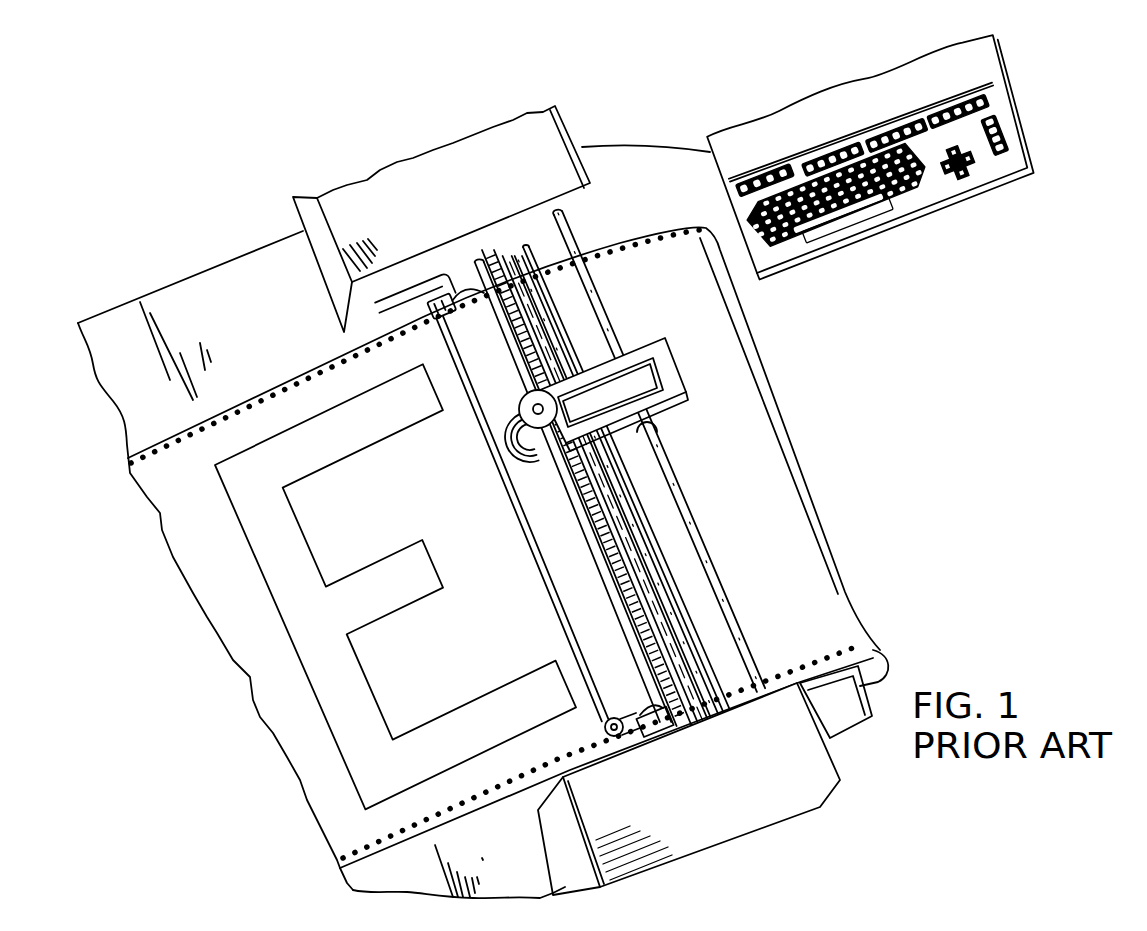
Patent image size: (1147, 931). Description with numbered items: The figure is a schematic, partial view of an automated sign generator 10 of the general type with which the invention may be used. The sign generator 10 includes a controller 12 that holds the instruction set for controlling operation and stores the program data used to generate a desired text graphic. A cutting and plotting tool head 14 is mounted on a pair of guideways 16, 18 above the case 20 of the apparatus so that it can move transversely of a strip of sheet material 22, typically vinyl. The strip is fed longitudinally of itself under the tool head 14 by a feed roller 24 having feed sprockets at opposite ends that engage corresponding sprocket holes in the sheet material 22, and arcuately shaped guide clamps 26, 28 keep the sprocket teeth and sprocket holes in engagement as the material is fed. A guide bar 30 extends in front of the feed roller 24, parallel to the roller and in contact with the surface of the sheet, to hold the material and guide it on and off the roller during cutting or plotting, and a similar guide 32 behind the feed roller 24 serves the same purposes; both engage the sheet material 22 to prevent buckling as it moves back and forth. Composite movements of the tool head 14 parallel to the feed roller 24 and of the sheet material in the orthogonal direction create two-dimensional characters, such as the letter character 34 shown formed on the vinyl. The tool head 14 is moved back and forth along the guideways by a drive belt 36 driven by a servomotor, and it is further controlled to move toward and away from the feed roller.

The automated sign generator 10 is at (863, 481).
The controller 12 is at (796, 118).
The cutting and plotting tool head 14 is at (648, 343).
The guideway 16 is at (592, 522).
The guideway 18 is at (676, 483).
The case 20 is at (807, 763).
The sheet material 22 is at (331, 809).
The feed roller 24 is at (611, 754).
The guide clamp 26 is at (651, 712).
The guide clamp 28 is at (469, 297).
The guide bar 30 is at (563, 604).
The guide 32 is at (626, 511).
The letter character 34 is at (374, 580).
The drive belt 36 is at (627, 565).